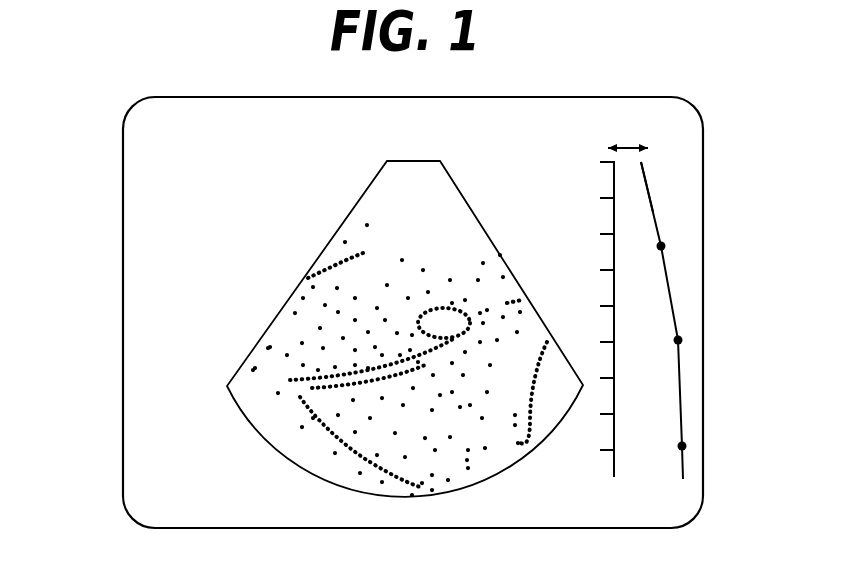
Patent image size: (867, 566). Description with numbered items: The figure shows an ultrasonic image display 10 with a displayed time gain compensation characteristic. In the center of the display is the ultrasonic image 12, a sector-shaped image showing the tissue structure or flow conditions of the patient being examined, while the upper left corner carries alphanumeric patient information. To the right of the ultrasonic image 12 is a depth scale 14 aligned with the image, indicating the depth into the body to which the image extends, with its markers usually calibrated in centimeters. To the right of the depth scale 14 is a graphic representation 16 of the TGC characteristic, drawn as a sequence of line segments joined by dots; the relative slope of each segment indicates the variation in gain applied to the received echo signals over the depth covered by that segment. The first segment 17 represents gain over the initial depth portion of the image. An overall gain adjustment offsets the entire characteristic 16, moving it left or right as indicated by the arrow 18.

The ultrasonic image display 10 is at (123, 253).
The ultrasonic image 12 is at (298, 287).
The depth scale 14 is at (614, 462).
The graphic representation of the TGC characteristic 16 is at (670, 290).
The first segment of the TGC characteristic 17 is at (653, 199).
The arrow 18 is at (631, 147).